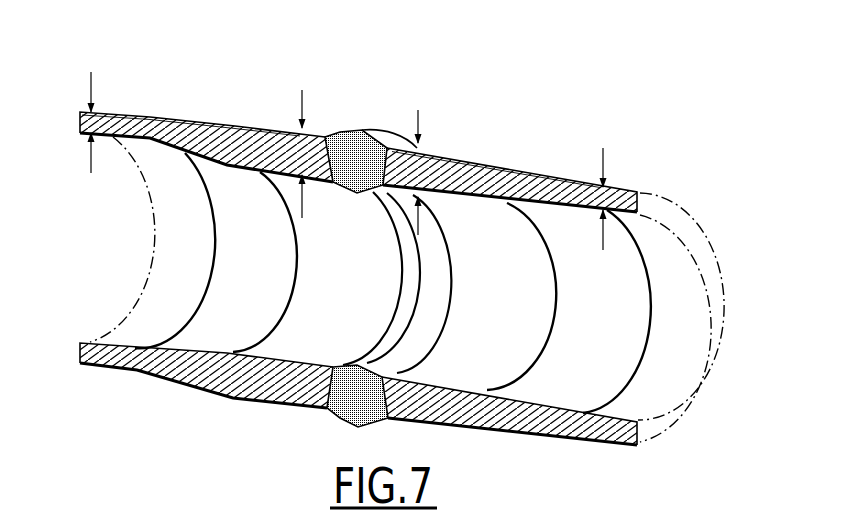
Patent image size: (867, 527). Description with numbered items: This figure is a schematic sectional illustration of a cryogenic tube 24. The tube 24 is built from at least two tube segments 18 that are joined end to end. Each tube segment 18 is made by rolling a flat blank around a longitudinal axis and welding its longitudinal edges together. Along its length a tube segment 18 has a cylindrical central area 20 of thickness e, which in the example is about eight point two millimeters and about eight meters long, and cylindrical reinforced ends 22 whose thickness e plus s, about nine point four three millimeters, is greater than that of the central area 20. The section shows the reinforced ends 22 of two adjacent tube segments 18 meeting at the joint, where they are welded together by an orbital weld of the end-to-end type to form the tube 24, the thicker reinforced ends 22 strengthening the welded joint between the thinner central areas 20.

The tube segment 18 is at (198, 122).
The cylindrical central area 20 is at (102, 360).
The cylindrical reinforced ends 22 is at (267, 137).
The tube 24 is at (135, 85).